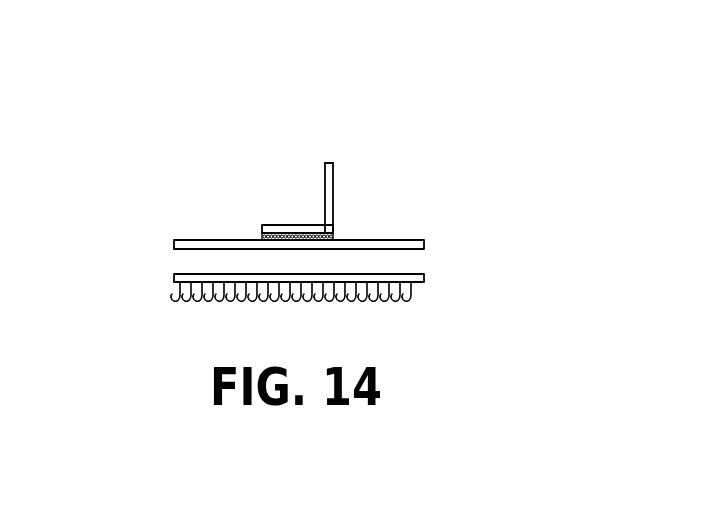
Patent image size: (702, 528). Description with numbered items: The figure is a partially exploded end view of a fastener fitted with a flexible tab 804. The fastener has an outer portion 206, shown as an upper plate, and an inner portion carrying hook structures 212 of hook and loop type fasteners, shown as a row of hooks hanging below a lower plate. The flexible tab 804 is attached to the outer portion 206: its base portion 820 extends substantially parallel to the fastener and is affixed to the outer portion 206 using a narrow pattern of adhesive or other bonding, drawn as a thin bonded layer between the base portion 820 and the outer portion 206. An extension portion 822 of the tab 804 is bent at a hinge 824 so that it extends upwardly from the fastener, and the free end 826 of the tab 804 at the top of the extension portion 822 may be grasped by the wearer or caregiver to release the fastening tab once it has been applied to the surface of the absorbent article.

The outer portion 206 is at (190, 240).
The hook structures 212 is at (193, 302).
The flexible tab 804 is at (349, 151).
The base portion 820 is at (277, 225).
The extension portion 822 is at (333, 195).
The hinge 824 is at (333, 233).
The free end 826 is at (331, 163).